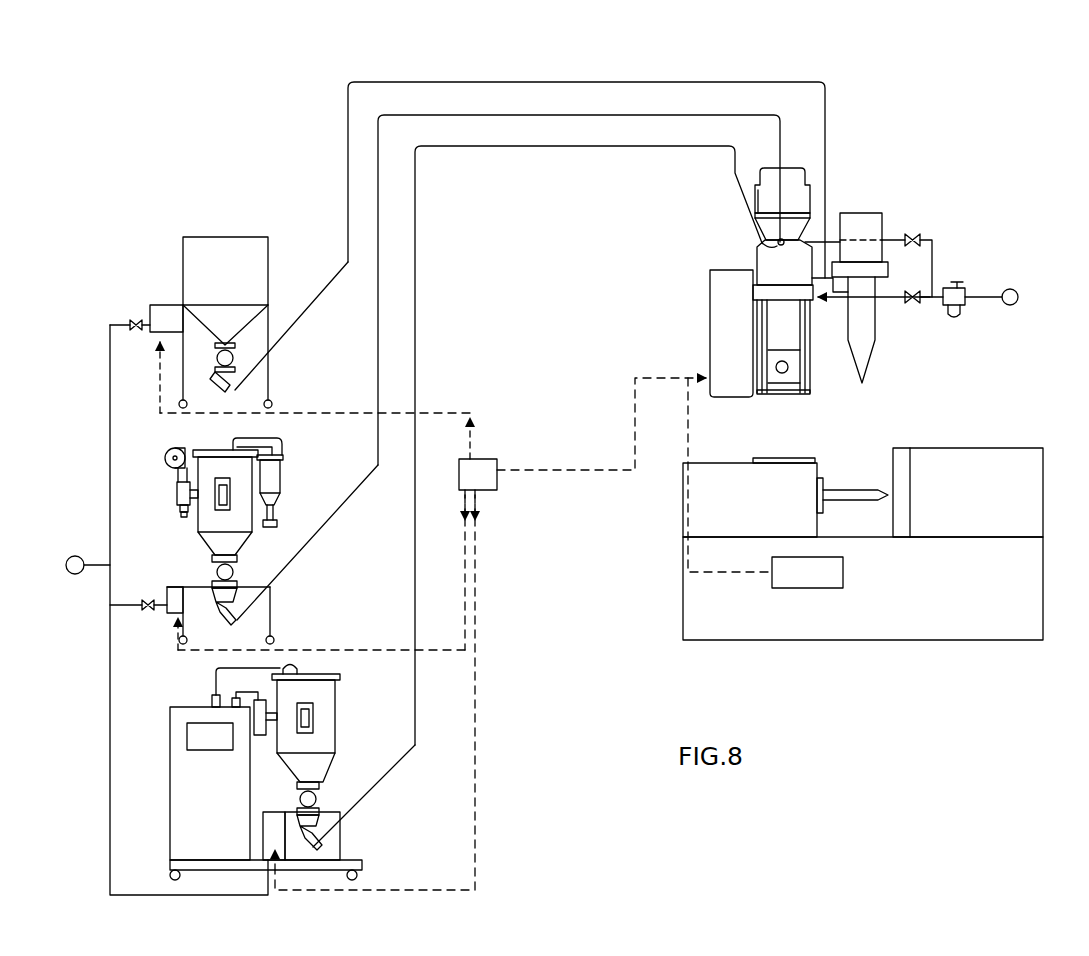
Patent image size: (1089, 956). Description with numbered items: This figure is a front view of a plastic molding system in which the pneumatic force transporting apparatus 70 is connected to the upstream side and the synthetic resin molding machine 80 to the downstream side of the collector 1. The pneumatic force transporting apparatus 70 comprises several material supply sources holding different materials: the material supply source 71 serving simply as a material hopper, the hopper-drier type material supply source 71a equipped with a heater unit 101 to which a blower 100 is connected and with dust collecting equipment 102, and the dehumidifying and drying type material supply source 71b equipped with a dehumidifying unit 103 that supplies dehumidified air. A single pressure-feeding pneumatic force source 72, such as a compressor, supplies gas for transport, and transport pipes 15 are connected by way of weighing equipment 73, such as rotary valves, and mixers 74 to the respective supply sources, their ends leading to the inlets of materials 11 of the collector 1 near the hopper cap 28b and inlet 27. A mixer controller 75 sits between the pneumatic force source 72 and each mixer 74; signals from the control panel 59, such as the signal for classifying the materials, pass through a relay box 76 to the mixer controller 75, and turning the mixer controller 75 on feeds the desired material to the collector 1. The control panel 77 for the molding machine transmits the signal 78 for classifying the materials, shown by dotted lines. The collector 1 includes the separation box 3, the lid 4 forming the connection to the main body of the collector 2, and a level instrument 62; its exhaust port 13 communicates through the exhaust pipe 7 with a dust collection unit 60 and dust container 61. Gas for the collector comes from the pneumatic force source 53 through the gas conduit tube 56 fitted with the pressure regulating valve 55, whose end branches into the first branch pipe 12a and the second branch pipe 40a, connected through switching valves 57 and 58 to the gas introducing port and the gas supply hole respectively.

The pneumatic force transporting apparatus 70 is at (749, 76).
The transport pipes 15 is at (494, 82).
The hopper inlet 27 is at (758, 195).
The hopper cap 28b is at (795, 168).
The collector 1 is at (733, 200).
The inlets of materials 11 is at (762, 243).
The exhaust pipe 7 is at (838, 262).
The dust collection unit 60 is at (863, 212).
The first branch pipe 12a is at (882, 240).
The switching valve 57 is at (915, 240).
The gas conduit tube 56 is at (963, 296).
The pneumatic force source 53 is at (1016, 291).
The pressure regulating valve 55 is at (960, 312).
The switching valve 58 is at (915, 302).
The second branch pipe 40a is at (882, 300).
The dust container 61 is at (868, 365).
The exhaust port 13 is at (815, 301).
The main body of the collector 2 is at (803, 330).
The level instrument 62 is at (790, 370).
The separation box 3 is at (756, 270).
The lid 4 is at (753, 296).
The control panel 59 is at (710, 355).
The signal for classifying the materials 78 is at (686, 402).
The relay box 76 is at (498, 462).
The control panel for the molding machine 77 is at (813, 589).
The synthetic resin molding machine 80 is at (1015, 645).
The material supply source 71 is at (250, 237).
The mixer controller 75 is at (150, 318).
The weighing equipment 73 is at (236, 358).
The mixer 74 is at (222, 388).
The blower 100 is at (166, 460).
The hopper-drier type material supply source 71a is at (200, 460).
The heater unit 101 is at (177, 495).
The dust collecting equipment 102 is at (283, 478).
The pneumatic force source 72 is at (75, 575).
The dehumidifying unit 103 is at (170, 790).
The dehumidifying and drying type material supply source 71b is at (338, 700).